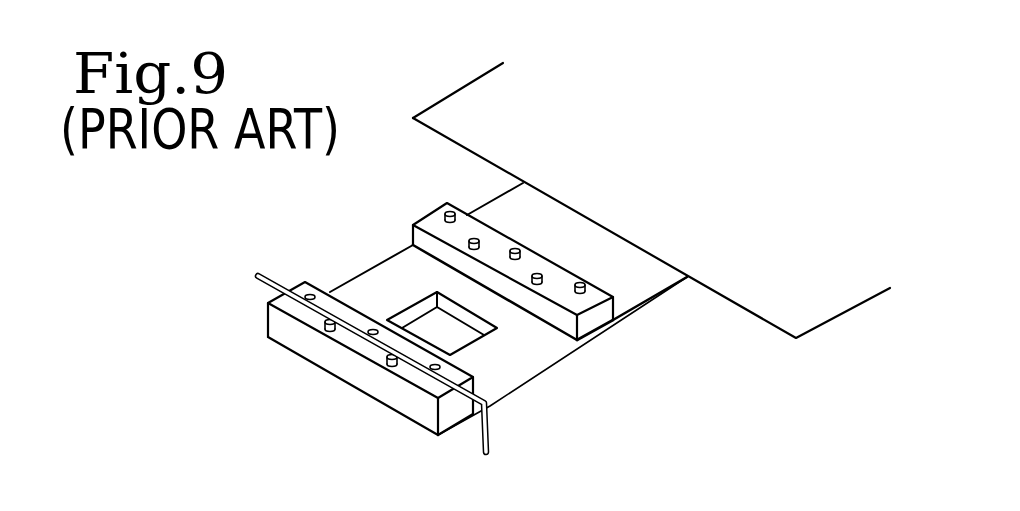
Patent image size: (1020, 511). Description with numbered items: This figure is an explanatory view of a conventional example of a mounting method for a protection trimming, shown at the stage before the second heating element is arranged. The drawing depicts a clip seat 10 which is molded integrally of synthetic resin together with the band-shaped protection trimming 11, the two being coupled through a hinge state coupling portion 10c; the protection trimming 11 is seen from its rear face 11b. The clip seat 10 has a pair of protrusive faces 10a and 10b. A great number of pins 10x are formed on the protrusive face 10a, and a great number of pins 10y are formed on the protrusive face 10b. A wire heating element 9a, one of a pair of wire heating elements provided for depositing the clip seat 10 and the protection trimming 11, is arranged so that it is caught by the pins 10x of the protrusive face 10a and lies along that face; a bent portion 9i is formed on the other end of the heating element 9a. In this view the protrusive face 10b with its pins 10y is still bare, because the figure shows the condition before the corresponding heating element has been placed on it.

The wire heating element 9a is at (423, 372).
The bent portion 9i is at (490, 431).
The clip seat 10 is at (593, 332).
The protrusive face 10a is at (352, 343).
The protrusive face 10b is at (433, 219).
The hinge state coupling portion 10c is at (687, 279).
The pins 10x is at (320, 333).
The pins 10y is at (465, 243).
The protection trimming 11 is at (765, 323).
The rear face of the protection trimming 11b is at (480, 110).